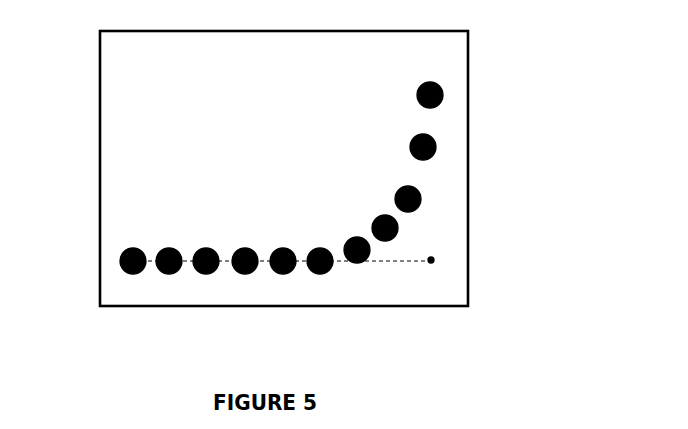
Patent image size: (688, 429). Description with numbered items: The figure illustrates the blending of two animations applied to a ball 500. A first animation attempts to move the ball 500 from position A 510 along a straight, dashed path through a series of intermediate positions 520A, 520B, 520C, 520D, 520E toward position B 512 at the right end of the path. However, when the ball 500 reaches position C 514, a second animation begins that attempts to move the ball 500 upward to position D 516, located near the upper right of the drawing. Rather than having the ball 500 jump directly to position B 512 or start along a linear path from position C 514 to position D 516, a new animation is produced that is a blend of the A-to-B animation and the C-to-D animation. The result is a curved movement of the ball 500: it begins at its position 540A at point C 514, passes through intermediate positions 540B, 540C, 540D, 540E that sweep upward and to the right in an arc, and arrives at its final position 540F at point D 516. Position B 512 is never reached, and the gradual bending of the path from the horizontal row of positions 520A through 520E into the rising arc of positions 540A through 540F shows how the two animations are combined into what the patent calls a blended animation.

The ball 500 is at (136, 248).
The position A 510 is at (118, 250).
The position B 512 is at (432, 266).
The position C 514 is at (312, 248).
The position D 516 is at (445, 87).
The intermediate position 520A is at (127, 273).
The intermediate position 520B is at (163, 272).
The intermediate position 520C is at (200, 273).
The intermediate position 520D is at (237, 273).
The intermediate position 520E is at (271, 275).
The ball position at point C 540A is at (327, 268).
The intermediate position of blended animation 540B is at (371, 249).
The intermediate position of blended animation 540C is at (398, 227).
The intermediate position of blended animation 540D is at (421, 197).
The intermediate position of blended animation 540E is at (437, 147).
The final position at point D 540F is at (442, 103).